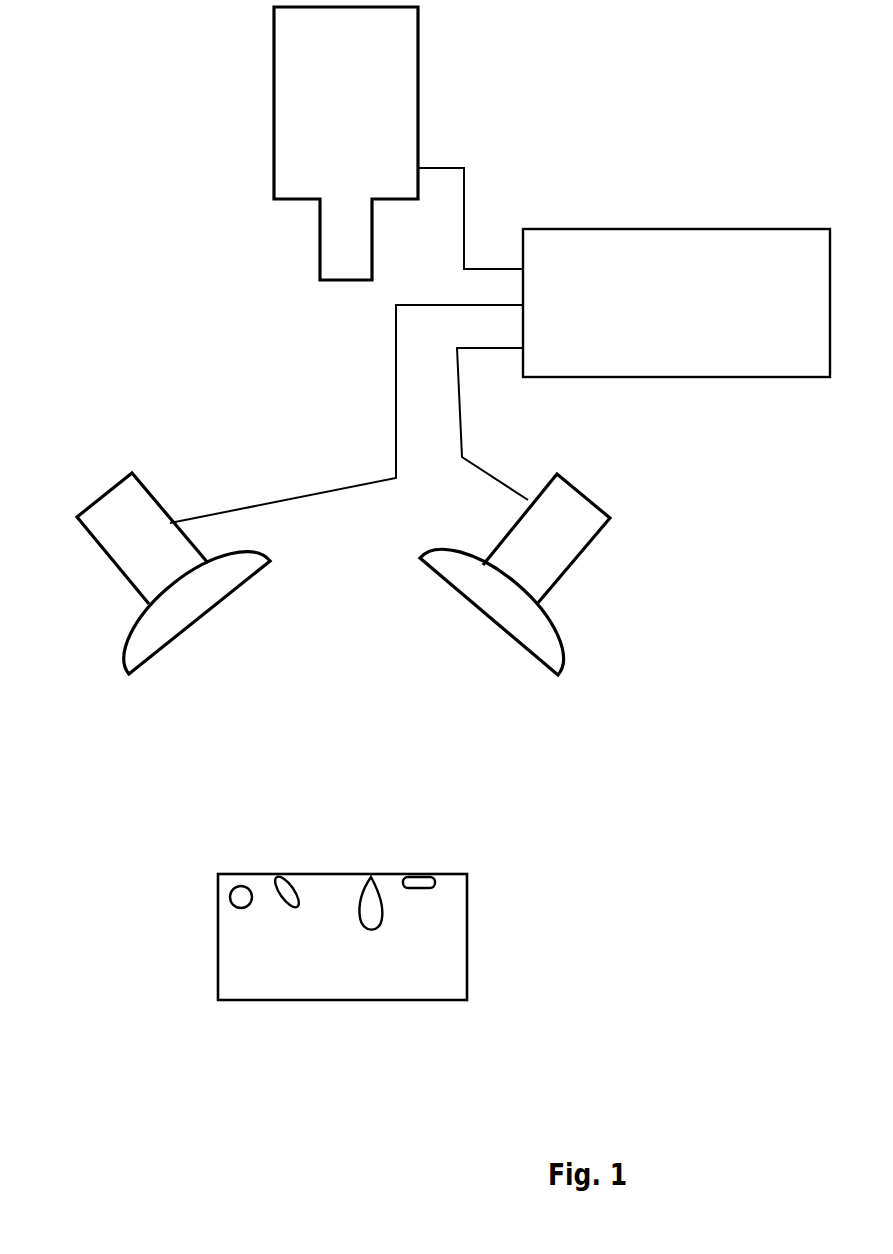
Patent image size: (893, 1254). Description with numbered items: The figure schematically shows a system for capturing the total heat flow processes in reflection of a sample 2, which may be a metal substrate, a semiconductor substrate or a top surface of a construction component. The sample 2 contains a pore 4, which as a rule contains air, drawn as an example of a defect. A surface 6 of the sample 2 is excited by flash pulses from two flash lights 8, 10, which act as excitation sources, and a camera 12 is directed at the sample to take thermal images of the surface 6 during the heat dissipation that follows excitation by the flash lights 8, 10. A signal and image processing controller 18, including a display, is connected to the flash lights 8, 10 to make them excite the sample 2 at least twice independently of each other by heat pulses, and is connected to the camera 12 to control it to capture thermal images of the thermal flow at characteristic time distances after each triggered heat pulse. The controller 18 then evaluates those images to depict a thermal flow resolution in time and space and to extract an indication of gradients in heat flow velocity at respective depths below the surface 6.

The sample 2 is at (336, 977).
The pore 4 is at (368, 880).
The surface 6 is at (258, 875).
The flash light 8 is at (128, 545).
The flash light 10 is at (557, 549).
The camera 12 is at (418, 86).
The signal and image processing controller 18 is at (593, 245).